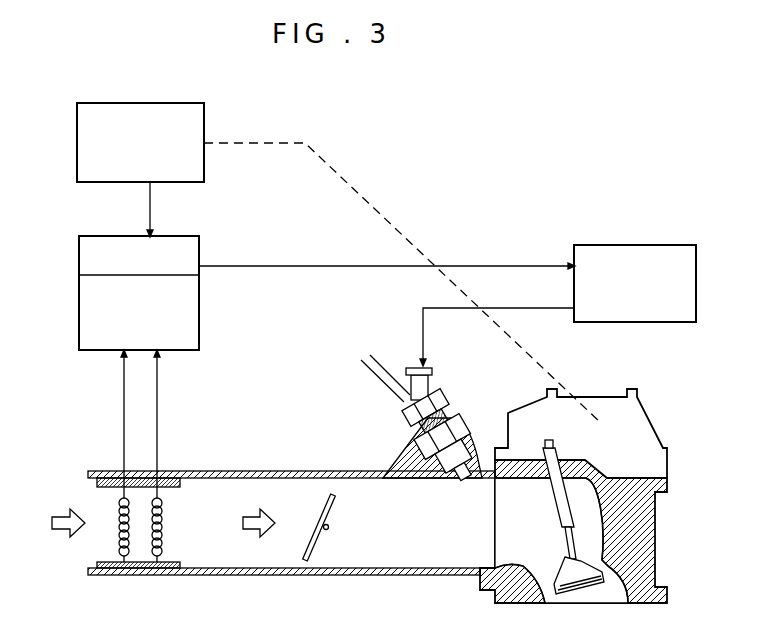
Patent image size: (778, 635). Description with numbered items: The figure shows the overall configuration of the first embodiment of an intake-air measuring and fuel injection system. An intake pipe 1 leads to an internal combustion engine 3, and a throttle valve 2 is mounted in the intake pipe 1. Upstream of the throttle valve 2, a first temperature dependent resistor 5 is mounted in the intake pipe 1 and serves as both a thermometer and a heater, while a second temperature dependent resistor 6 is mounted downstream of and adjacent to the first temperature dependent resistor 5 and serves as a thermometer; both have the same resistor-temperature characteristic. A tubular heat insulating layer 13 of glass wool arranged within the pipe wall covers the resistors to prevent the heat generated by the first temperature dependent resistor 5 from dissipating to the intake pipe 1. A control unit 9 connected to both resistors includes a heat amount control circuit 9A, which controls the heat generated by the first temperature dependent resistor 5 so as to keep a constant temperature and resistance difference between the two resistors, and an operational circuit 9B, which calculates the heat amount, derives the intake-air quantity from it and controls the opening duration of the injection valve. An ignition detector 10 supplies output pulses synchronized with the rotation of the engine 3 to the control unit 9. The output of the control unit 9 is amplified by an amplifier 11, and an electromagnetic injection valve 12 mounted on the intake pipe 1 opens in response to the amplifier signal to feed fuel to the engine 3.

The intake pipe 1 is at (410, 562).
The throttle valve 2 is at (309, 538).
The internal combustion engine 3 is at (645, 430).
The first temperature dependent resistor 5 is at (118, 537).
The second temperature dependent resistor 6 is at (163, 537).
The control unit 9 is at (203, 242).
The heat amount control circuit 9A is at (200, 297).
The operational circuit 9B is at (202, 252).
The ignition detector 10 is at (204, 127).
The amplifier 11 is at (574, 252).
The electromagnetic injection valve 12 is at (428, 385).
The tubular heat insulating layer 13 is at (172, 477).